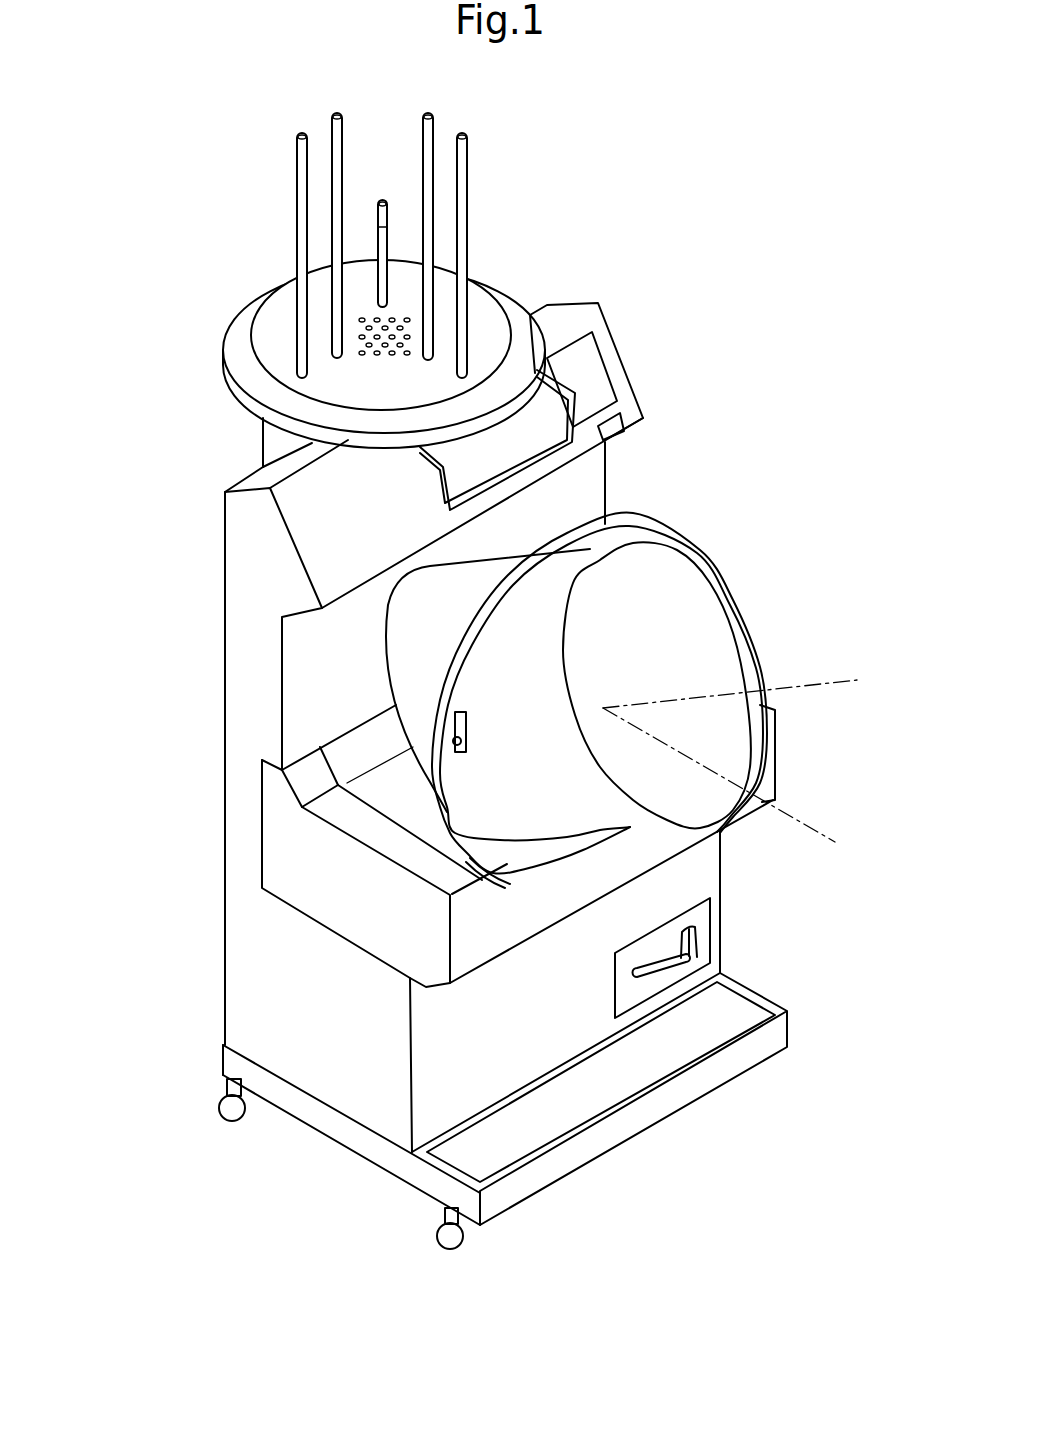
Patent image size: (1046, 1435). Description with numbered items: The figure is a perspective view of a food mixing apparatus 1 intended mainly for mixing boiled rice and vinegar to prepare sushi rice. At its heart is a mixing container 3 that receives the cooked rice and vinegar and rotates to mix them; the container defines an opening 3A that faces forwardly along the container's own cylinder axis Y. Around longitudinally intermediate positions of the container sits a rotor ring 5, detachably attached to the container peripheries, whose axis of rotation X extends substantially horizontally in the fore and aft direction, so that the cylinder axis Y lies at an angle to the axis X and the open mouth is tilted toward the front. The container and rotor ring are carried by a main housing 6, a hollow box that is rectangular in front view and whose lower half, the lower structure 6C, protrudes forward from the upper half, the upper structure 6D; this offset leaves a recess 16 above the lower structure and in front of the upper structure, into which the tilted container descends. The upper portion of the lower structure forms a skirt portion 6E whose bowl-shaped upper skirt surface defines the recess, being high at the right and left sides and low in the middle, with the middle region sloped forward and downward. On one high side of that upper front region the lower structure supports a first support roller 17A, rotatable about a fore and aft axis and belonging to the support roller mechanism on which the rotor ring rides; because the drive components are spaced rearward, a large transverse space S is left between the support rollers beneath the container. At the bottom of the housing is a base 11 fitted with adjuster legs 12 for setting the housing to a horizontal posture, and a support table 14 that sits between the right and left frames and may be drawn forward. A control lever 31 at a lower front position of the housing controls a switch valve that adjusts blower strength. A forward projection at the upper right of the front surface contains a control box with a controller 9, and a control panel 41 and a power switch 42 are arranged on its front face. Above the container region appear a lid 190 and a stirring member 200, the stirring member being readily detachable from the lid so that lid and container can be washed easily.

The food mixing apparatus 1 is at (690, 243).
The mixing container 3 is at (614, 663).
The opening 3A is at (653, 613).
The rotor ring 5 is at (678, 525).
The main housing 6 is at (475, 805).
The lower structure 6C is at (497, 942).
The upper structure 6D is at (338, 578).
The skirt portion 6E is at (613, 863).
The controller 9 is at (657, 352).
The base 11 is at (697, 1125).
The adjuster legs 12 is at (232, 1121).
The support table 14 is at (592, 1148).
The recess 16 is at (388, 782).
The first support roller 17A is at (490, 862).
The control lever 31 is at (672, 973).
The control panel 41 is at (593, 365).
The power switch 42 is at (623, 418).
The lid 190 is at (233, 308).
The stirring member 200 is at (478, 222).
The transverse space S is at (560, 885).
The axis of rotation X is at (822, 830).
The cylinder axis Y is at (795, 688).